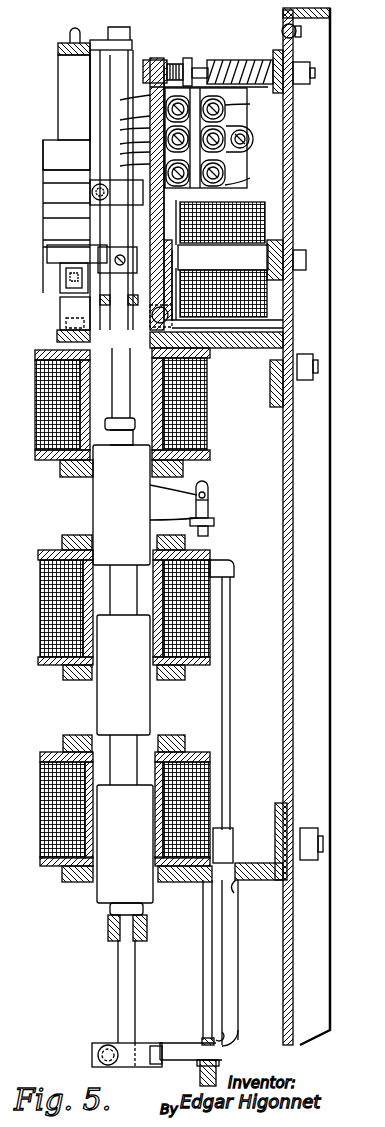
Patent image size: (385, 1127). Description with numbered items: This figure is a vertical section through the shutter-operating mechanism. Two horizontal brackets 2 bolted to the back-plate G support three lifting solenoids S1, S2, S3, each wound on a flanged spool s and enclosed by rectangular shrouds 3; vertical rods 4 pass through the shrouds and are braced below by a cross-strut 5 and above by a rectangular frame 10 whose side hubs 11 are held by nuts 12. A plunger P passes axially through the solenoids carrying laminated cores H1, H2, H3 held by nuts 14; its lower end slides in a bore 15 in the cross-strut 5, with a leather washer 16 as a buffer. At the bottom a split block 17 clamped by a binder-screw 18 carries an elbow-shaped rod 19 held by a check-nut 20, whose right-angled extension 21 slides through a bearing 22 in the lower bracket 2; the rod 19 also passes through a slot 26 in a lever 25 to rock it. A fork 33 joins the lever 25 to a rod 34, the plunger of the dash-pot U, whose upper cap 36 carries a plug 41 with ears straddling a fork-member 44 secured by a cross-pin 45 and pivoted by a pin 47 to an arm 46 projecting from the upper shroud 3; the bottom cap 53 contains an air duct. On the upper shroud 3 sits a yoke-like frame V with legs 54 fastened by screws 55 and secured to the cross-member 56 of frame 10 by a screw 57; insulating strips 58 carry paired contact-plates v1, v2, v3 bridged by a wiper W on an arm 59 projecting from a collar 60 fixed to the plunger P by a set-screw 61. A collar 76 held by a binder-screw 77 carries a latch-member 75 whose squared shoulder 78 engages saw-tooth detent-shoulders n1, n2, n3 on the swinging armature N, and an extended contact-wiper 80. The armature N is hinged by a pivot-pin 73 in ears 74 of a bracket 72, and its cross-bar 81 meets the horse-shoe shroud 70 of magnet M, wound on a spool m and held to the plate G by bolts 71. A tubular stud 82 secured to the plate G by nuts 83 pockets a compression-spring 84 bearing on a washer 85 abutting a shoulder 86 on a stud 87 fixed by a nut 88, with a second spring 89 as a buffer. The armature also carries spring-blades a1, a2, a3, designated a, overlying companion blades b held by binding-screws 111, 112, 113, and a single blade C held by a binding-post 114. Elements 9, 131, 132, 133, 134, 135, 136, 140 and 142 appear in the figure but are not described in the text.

The back-plate G is at (284, 24).
The bolt 9 is at (301, 31).
The nuts 83 is at (300, 84).
The binding-screw 113 is at (250, 110).
The binding-post 114 is at (262, 132).
The tubular stud 82 is at (262, 58).
The washer 85 is at (185, 70).
The shoulder 86 is at (200, 66).
The stud 87 is at (186, 62).
The nut 88 is at (148, 66).
The second coiled spring 89 is at (148, 95).
The collar 60 is at (152, 232).
The set-screw 61 is at (152, 270).
The companion spring-blades b is at (225, 176).
The coiled compression-spring 84 is at (244, 102).
The single blade C is at (247, 139).
The binding-screw 112 is at (250, 147).
The binding-screw 111 is at (252, 165).
The spring-blades a is at (228, 168).
The trigger-member N is at (237, 189).
The magnet M is at (265, 210).
The U-shaped shroud 70 is at (210, 265).
The cross-bar 81 is at (197, 258).
The spool m is at (221, 258).
The bolts 71 is at (300, 250).
The upstanding lugs 74 is at (227, 323).
The bracket 72 is at (172, 322).
The pivot-pin 73 is at (208, 340).
The yoke-like frame V is at (58, 112).
The legs 54 is at (74, 97).
The side hubs 11 is at (110, 108).
The cross-member 56 is at (60, 43).
The screw 57 is at (80, 28).
The vertical rods 4 is at (123, 27).
The nuts 12 is at (131, 31).
The rectangular frame 10 is at (100, 60).
The detent-shoulder n3 is at (129, 100).
The spring-blade a3 is at (129, 119).
The detent-shoulder n2 is at (129, 129).
The spring-blade a2 is at (129, 143).
The spring-blade a1 is at (129, 153).
The detent-shoulder n1 is at (129, 165).
The insulating strips 58 is at (66, 155).
The collar 76 is at (100, 180).
The contact-plates v3 is at (64, 184).
The binder-screw 77 is at (75, 193).
The latch-member 75 is at (135, 195).
The contact-plates v2 is at (66, 213).
The contact-wiper 80 is at (135, 222).
The squared shoulder 78 is at (137, 216).
The contact-plates v1 is at (66, 216).
The arm 59 is at (60, 255).
The wiper W is at (60, 283).
The screws 55 is at (75, 313).
The rectangular shrouds 3 is at (57, 338).
The coil end 136 is at (35, 355).
The coil 135 is at (35, 390).
The coil 134 is at (35, 420).
The coil end 133 is at (35, 455).
The coil 132 is at (7, 478).
The coil end 131 is at (46, 540).
The coil 142 is at (40, 572).
The coil end 140 is at (46, 625).
The lifting solenoid S3 is at (208, 418).
The horizontal arms 2 is at (250, 345).
The flanged spools s is at (210, 455).
The lifting solenoid S2 is at (210, 608).
The lifting solenoid S1 is at (210, 790).
The plunger P is at (115, 362).
The nuts 14 is at (110, 418).
The core H3 is at (121, 505).
The bore 15 is at (98, 950).
The core H2 is at (123, 675).
The core H1 is at (125, 844).
The washer 16 is at (108, 922).
The cross-strut 5 is at (148, 932).
The arm 46 is at (173, 502).
The pin 47 is at (210, 495).
The fork-member 44 is at (210, 510).
The cross-pin 45 is at (214, 522).
The plug 41 is at (210, 535).
The upper cap 36 is at (235, 568).
The dash-pot U is at (222, 722).
The bottom cap 53 is at (233, 828).
The bearing 22 is at (242, 888).
The right-angled extension 21 is at (240, 932).
The rod 34 is at (205, 968).
The lever 25 is at (204, 1040).
The check-nut 20 is at (160, 1043).
The split block 17 is at (128, 1068).
The binder-screw 18 is at (98, 1066).
The elbow-shaped rod 19 is at (167, 1055).
The fork 33 is at (200, 1070).
The slot 26 is at (220, 1064).